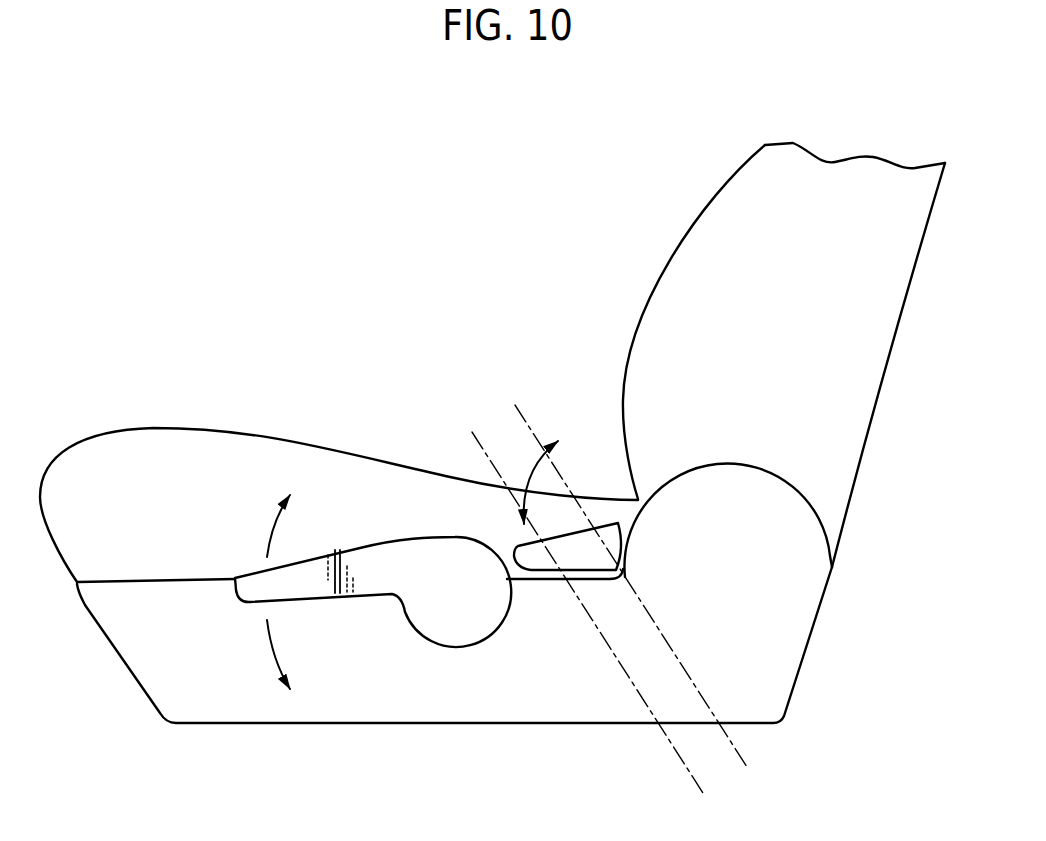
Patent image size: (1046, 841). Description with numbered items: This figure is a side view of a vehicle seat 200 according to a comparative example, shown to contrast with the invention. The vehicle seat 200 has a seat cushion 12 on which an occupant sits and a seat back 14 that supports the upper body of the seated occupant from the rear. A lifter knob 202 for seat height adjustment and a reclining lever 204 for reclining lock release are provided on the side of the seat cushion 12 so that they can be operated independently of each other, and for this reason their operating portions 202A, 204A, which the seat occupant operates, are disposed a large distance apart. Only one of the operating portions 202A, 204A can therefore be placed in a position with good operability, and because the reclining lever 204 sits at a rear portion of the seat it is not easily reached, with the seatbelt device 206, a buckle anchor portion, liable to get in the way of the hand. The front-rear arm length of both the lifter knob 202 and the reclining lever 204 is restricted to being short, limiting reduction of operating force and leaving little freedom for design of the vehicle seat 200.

The vehicle seat 200 is at (441, 163).
The seat cushion 12 is at (228, 455).
The seat back 14 is at (717, 227).
The lifter knob 202 is at (361, 530).
The operating portion 202A is at (303, 585).
The reclining lever 204 is at (600, 512).
The operating portion 204A is at (532, 560).
The seatbelt device 206 is at (647, 675).